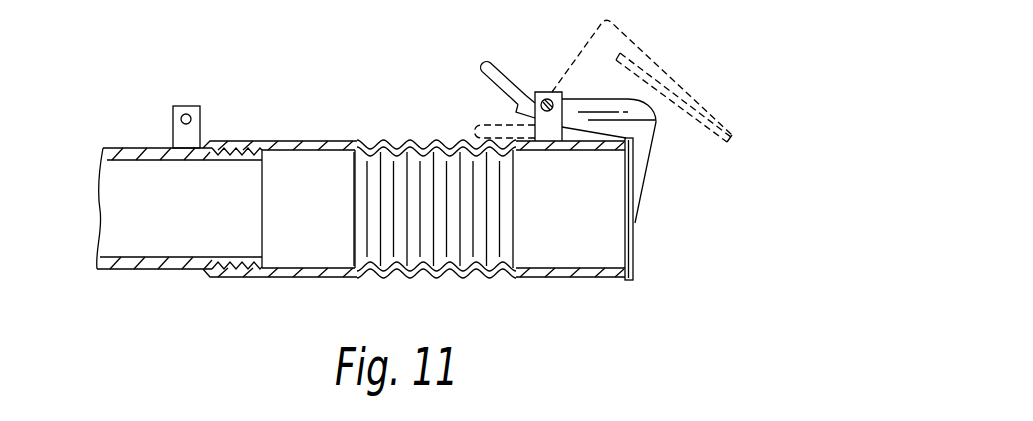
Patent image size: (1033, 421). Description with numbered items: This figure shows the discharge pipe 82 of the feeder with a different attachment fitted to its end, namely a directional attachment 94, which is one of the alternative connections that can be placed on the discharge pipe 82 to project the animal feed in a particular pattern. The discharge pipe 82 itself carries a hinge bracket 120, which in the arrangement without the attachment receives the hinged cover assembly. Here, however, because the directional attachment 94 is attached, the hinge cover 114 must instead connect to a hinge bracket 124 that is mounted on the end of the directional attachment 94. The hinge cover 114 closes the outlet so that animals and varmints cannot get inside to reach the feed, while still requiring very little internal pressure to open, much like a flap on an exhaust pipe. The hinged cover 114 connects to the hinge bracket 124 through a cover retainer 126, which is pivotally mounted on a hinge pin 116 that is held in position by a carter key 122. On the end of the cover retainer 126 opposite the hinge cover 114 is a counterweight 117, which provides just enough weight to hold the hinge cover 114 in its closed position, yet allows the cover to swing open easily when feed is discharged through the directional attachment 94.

The discharge pipe 82 is at (167, 270).
The directional attachment 94 is at (292, 141).
The hinge cover 114 is at (634, 236).
The hinge pin 116 is at (563, 99).
The counterweight 117 is at (492, 86).
The hinge bracket 120 is at (172, 128).
The carter key 122 is at (547, 96).
The hinge bracket 124 is at (556, 142).
The cover retainer 126 is at (657, 123).